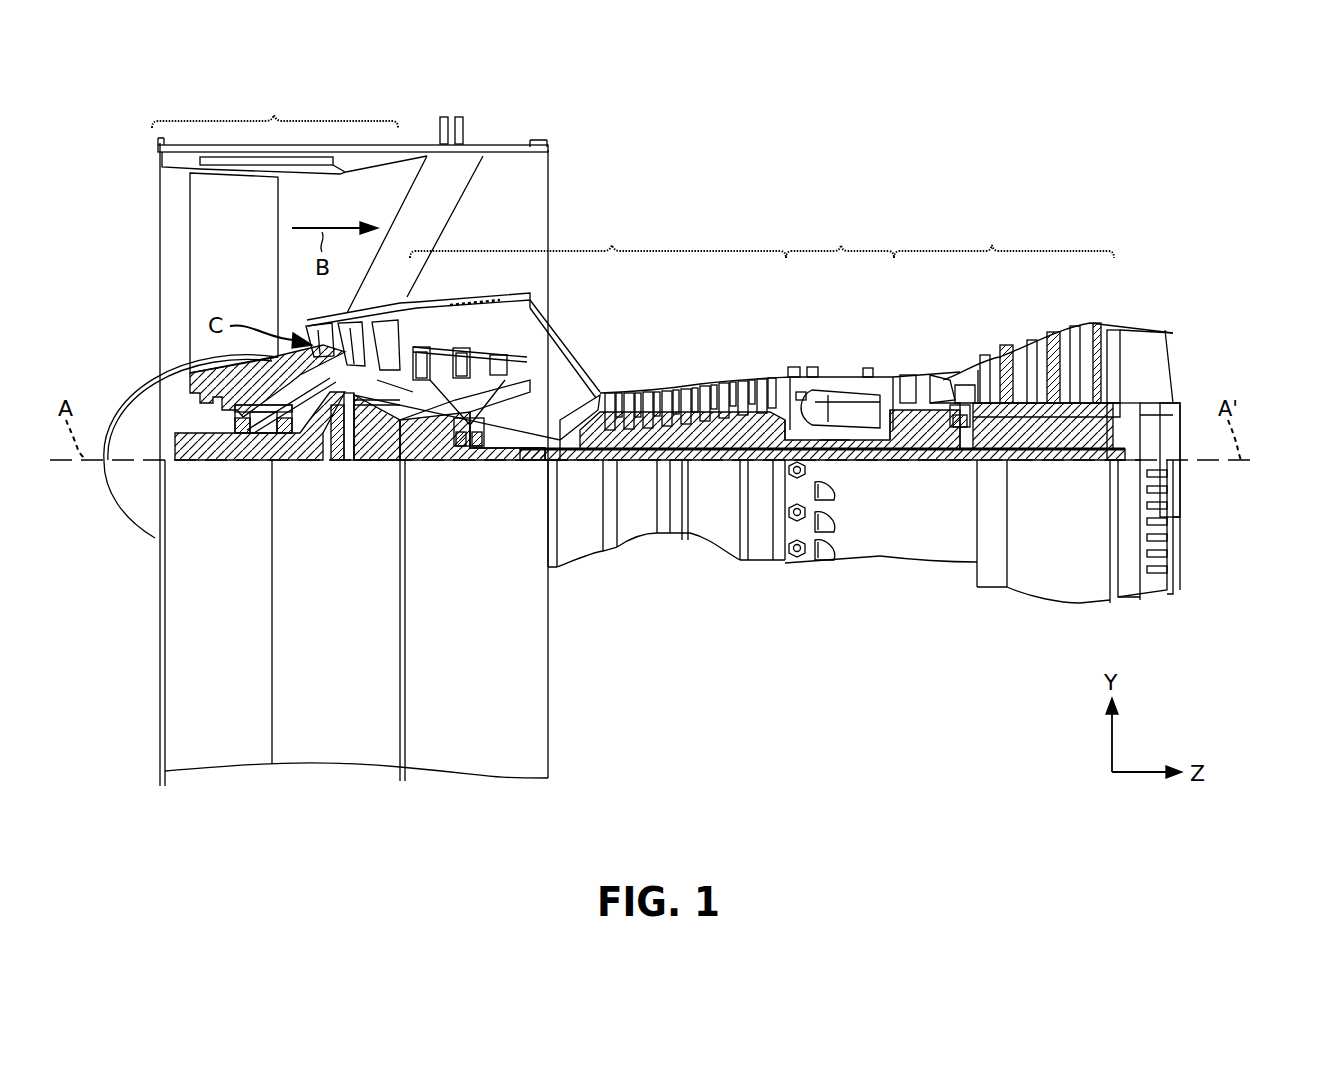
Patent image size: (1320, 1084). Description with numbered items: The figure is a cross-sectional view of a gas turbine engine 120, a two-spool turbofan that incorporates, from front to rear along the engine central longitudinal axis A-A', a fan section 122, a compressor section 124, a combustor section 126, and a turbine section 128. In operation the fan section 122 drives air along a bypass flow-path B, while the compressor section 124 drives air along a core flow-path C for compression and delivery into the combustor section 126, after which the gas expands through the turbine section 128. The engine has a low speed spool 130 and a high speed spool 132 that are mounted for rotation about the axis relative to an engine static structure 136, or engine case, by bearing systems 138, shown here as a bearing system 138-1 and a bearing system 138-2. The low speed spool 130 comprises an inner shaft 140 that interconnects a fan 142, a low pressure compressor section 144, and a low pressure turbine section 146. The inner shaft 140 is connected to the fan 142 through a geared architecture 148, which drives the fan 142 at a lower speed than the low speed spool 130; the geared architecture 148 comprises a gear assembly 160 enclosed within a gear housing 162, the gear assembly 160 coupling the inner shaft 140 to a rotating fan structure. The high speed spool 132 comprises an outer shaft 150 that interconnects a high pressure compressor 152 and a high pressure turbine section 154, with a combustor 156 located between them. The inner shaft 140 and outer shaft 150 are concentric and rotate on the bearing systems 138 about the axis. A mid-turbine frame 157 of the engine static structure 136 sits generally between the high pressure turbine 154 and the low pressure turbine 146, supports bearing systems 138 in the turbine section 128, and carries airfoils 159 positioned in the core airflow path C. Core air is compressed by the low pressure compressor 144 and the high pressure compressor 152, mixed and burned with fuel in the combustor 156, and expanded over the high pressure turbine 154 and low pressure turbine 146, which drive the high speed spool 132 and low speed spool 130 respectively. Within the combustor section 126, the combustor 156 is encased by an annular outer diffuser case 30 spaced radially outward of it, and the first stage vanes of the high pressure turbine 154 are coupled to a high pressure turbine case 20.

The high pressure turbine case 20 is at (1030, 580).
The outer diffuser case 30 is at (902, 545).
The gas turbine engine 120 is at (684, 156).
The fan section 122 is at (275, 105).
The compressor section 124 is at (598, 237).
The combustor section 126 is at (840, 237).
The turbine section 128 is at (1004, 237).
The low speed spool 130 is at (719, 490).
The high speed spool 132 is at (760, 428).
The engine static structure 136 is at (762, 545).
The bearing system 138 is at (952, 462).
The bearing system 138-1 is at (236, 440).
The bearing system 138-2 is at (470, 455).
The inner shaft 140 is at (572, 464).
The fan 142 is at (244, 277).
The low pressure compressor section 144 is at (484, 360).
The low pressure turbine section 146 is at (1044, 340).
The geared architecture 148 is at (364, 486).
The outer shaft 150 is at (834, 446).
The high pressure compressor 152 is at (696, 395).
The high pressure turbine section 154 is at (910, 372).
The combustor 156 is at (840, 398).
The mid-turbine frame 157 is at (942, 372).
The airfoils 159 is at (957, 390).
The gear assembly 160 is at (350, 458).
The gear housing 162 is at (352, 400).